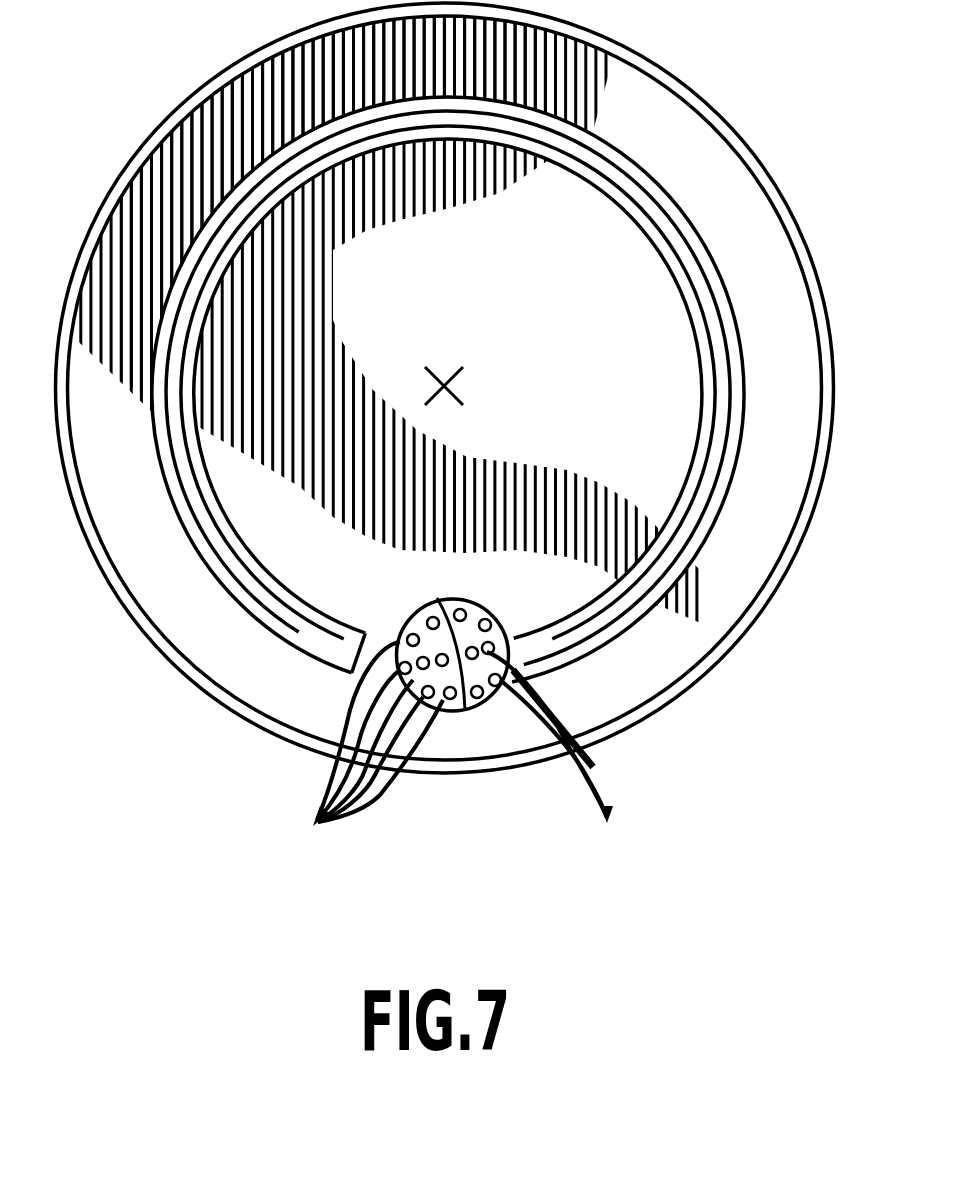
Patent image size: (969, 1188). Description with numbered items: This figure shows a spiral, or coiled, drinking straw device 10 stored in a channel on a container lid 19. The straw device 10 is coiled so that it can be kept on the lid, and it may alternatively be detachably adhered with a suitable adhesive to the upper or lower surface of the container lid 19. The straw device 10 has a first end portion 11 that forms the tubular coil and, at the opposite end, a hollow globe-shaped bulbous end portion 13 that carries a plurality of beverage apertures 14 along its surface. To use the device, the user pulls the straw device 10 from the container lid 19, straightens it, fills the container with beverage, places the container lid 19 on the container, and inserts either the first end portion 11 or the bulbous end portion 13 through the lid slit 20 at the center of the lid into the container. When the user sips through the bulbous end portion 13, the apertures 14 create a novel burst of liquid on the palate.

The drinking straw device 10 is at (651, 157).
The first end portion 11 is at (222, 182).
The bulbous end portion 13 is at (470, 713).
The bulbous end apertures 14 is at (456, 750).
The container lid 19 is at (801, 193).
The lid slit 20 is at (452, 385).